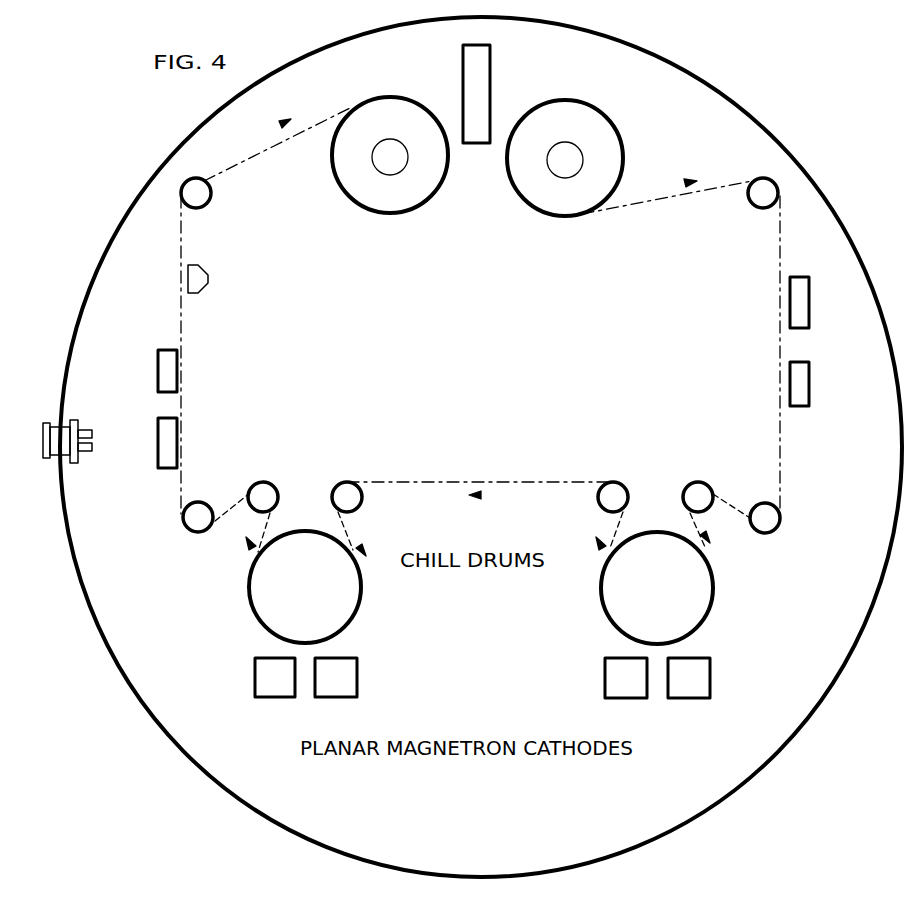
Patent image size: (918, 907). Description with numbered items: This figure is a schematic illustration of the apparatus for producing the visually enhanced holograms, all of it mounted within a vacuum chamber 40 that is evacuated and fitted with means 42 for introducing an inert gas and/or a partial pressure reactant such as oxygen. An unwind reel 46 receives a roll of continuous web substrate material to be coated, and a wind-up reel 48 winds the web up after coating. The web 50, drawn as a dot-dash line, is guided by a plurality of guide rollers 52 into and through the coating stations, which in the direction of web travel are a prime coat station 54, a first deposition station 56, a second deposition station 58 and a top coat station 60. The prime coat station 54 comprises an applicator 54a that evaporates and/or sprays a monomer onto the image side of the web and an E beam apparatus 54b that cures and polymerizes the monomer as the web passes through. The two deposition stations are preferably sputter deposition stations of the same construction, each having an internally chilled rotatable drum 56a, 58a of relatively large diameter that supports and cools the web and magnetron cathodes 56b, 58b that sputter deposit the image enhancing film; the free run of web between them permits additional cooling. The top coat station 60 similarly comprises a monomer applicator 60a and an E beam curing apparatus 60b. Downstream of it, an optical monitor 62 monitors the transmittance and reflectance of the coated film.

The vacuum chamber 40 is at (747, 785).
The gas introducing means 42 is at (56, 432).
The unwind reel 46 is at (575, 158).
The wind-up reel 48 is at (390, 152).
The web 50 is at (782, 448).
The guide rollers 52 is at (205, 190).
The prime coat station 54 is at (754, 341).
The applicator 54a is at (800, 300).
The E beam apparatus 54b is at (802, 380).
The first deposition station 56 is at (637, 640).
The internally chilled rotatable drum 56a is at (606, 589).
The magnetron cathodes 56b is at (636, 694).
The second deposition station 58 is at (288, 639).
The internally chilled rotatable drum 58a is at (261, 601).
The magnetron cathodes 58b is at (318, 694).
The top coat station 60 is at (194, 409).
The monomer applicator 60a is at (164, 444).
The E beam curing apparatus 60b is at (163, 362).
The optical monitor 62 is at (207, 279).